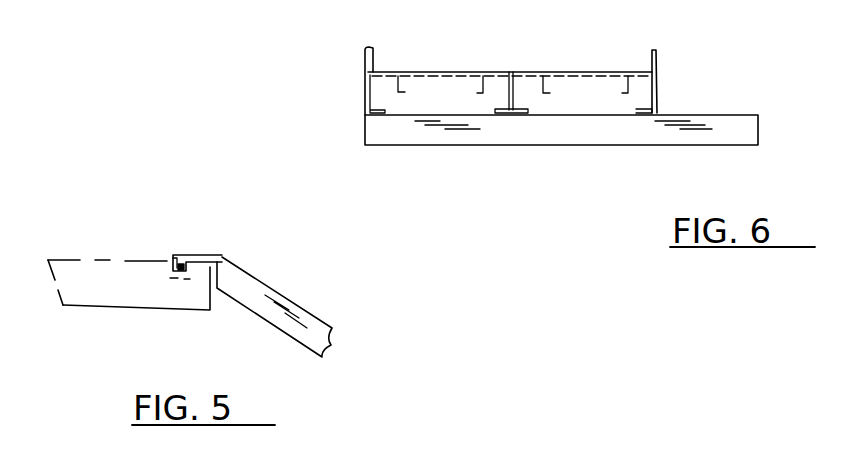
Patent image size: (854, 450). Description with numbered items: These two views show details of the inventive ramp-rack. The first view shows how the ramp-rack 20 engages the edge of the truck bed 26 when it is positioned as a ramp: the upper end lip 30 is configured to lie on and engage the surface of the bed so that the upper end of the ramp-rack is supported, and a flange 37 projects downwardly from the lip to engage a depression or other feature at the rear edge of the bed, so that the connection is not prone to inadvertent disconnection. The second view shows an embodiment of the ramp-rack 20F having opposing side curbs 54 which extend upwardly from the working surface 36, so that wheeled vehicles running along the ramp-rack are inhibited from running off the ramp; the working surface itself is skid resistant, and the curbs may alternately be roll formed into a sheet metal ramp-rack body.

In FIG. 5, the ramp-rack 20 is at (290, 298).
In FIG. 5, the truck bed 26 is at (108, 283).
In FIG. 5, the upper end lip 30 is at (198, 253).
In FIG. 5, the flange 37 is at (172, 263).
In FIG. 6, the ramp-rack 20F is at (325, 102).
In FIG. 6, the working surface 36 is at (490, 72).
In FIG. 6, the side curbs 54 is at (377, 58).